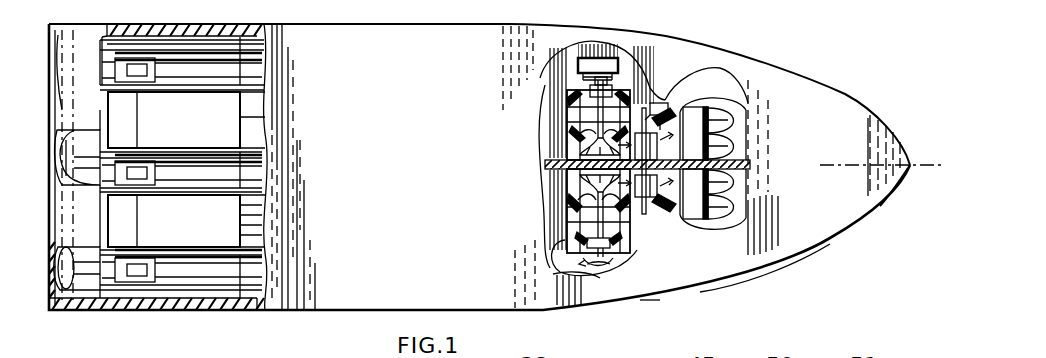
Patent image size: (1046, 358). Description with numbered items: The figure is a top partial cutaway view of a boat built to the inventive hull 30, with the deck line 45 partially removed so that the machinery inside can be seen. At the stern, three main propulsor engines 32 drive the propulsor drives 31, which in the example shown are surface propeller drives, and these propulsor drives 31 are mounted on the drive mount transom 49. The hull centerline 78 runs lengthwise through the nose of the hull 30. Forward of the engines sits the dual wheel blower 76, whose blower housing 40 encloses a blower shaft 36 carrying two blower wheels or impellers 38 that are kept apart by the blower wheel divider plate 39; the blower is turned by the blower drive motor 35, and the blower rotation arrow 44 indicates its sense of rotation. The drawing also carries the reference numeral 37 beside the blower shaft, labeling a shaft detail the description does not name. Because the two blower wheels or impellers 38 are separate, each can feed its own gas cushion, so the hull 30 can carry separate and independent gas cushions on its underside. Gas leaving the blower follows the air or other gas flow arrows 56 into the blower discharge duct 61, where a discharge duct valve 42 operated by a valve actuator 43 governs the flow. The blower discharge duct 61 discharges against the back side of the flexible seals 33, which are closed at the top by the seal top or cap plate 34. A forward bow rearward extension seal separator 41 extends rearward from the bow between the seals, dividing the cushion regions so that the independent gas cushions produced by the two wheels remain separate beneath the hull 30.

The hull 30 is at (790, 250).
The propulsor drives 31 is at (62, 145).
The main propulsor engines 32 is at (152, 166).
The flexible seals 33 is at (740, 121).
The seal top or cap plate 34 is at (742, 152).
The blower drive motor 35 is at (598, 66).
The blower shaft 36 is at (575, 225).
The valve collars 37 is at (590, 90).
The blower wheels or impellers 38 is at (575, 150).
The blower wheel divider plate 39 is at (570, 163).
The blower housing 40 is at (572, 240).
The forward bow rearward extension seal separator 41 is at (880, 206).
The discharge duct valve 42 is at (700, 92).
The valve actuator 43 is at (668, 104).
The blower rotation arrow 44 is at (594, 268).
The deck line 45 is at (652, 298).
The drive mount transom 49 is at (110, 228).
The air or other gas flow arrows 56 is at (700, 220).
The blower discharge duct 61 is at (643, 226).
The blower 76 is at (575, 135).
The hull centerline 78 is at (910, 165).